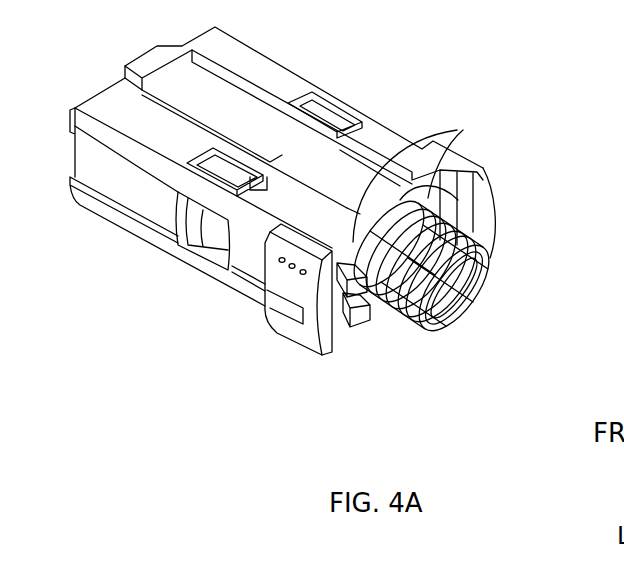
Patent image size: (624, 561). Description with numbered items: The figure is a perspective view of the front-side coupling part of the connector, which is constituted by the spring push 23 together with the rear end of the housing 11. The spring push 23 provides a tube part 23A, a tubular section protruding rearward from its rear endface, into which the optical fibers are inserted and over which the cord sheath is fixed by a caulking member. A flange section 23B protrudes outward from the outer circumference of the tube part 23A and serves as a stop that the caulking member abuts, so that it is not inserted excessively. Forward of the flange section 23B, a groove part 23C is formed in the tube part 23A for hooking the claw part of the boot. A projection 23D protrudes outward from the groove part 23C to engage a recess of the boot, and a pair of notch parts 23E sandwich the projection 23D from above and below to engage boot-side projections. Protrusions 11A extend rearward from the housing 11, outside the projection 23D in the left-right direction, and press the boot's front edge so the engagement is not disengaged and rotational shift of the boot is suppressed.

The housing 11 is at (285, 77).
The protrusions 11A is at (492, 210).
The spring push 23 is at (430, 198).
The tube part 23A is at (480, 308).
The flange section 23B is at (412, 222).
The groove part 23C is at (355, 232).
The projection 23D is at (342, 290).
The notch parts 23E is at (370, 266).